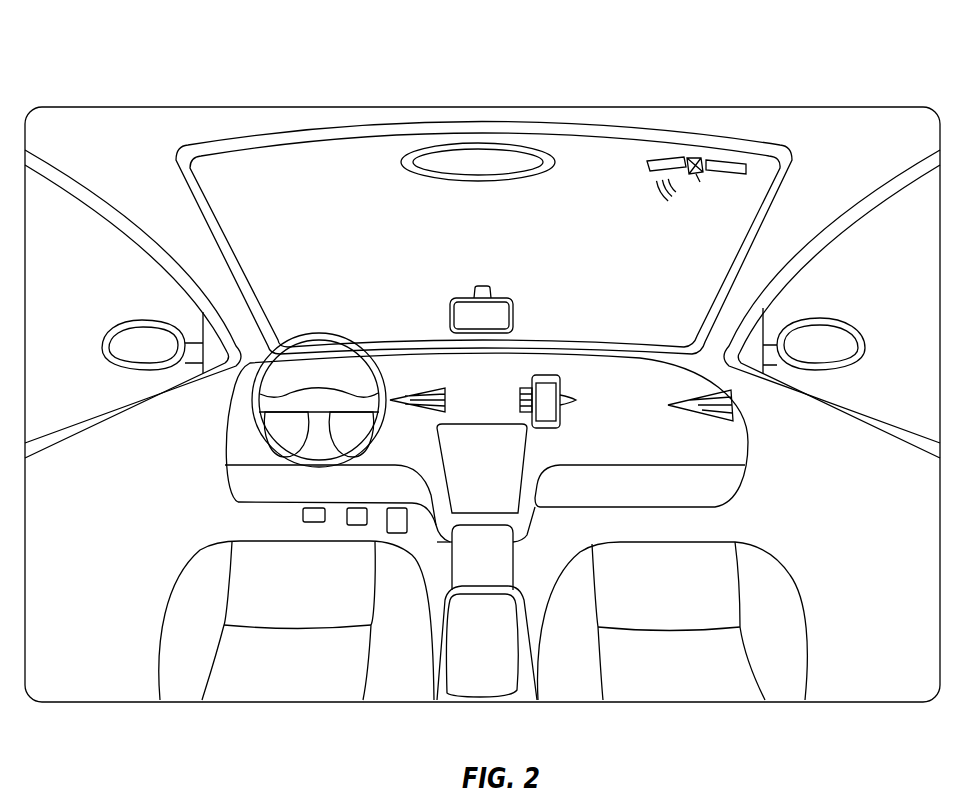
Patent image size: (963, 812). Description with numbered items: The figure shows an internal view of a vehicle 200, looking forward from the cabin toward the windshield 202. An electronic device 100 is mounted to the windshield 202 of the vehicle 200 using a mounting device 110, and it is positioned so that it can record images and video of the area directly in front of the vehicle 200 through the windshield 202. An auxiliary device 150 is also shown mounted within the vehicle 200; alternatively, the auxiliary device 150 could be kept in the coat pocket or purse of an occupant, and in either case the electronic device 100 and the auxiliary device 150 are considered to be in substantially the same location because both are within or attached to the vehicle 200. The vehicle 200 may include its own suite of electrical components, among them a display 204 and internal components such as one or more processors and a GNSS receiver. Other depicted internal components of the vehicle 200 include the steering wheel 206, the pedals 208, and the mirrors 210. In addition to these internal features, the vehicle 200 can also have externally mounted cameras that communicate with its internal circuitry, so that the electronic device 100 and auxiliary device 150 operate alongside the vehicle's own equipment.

The vehicle 200 is at (78, 72).
The windshield 202 is at (305, 291).
The display 204 is at (505, 482).
The steering wheel 206 is at (340, 412).
The pedals 208 is at (282, 516).
The mirrors 210 is at (403, 160).
The electronic device 100 is at (452, 304).
The mounting device 110 is at (492, 293).
The auxiliary device 150 is at (562, 396).